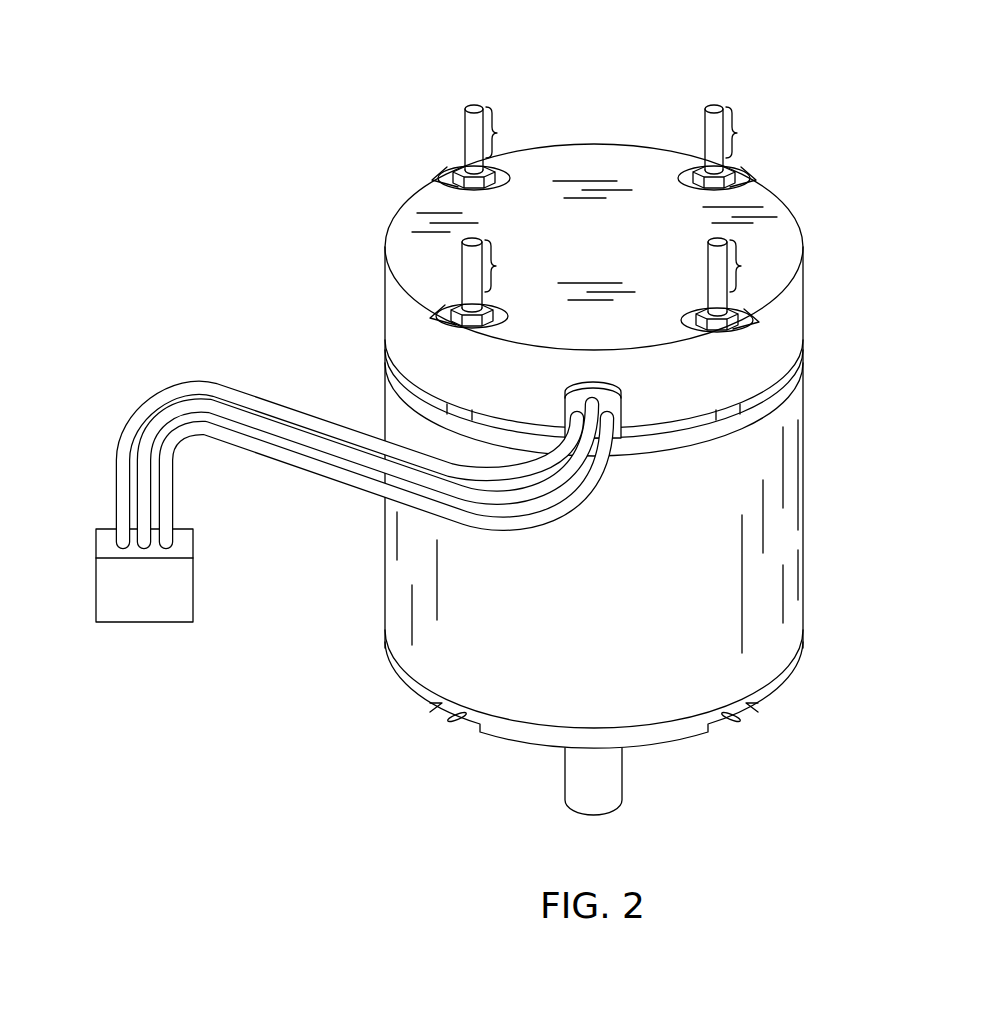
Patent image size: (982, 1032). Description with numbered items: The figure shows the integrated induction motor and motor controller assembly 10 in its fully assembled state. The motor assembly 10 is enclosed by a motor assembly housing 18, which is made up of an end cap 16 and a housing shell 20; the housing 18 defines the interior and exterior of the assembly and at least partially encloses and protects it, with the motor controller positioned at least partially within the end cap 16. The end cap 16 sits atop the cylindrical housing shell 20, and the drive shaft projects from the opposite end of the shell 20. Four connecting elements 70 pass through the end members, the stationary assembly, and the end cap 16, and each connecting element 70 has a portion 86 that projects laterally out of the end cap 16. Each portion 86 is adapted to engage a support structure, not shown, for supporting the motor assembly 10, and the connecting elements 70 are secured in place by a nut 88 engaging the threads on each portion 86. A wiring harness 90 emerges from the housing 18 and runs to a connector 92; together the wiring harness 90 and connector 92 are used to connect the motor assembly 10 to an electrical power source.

The integrated induction motor and motor controller assembly 10 is at (785, 84).
The end cap 16 is at (628, 300).
The motor assembly housing 18 is at (670, 479).
The housing shell 20 is at (785, 540).
The connecting elements 70 is at (470, 138).
The portion 86 is at (632, 199).
The nut 88 is at (452, 170).
The wiring harness 90 is at (208, 398).
The connector 92 is at (125, 613).